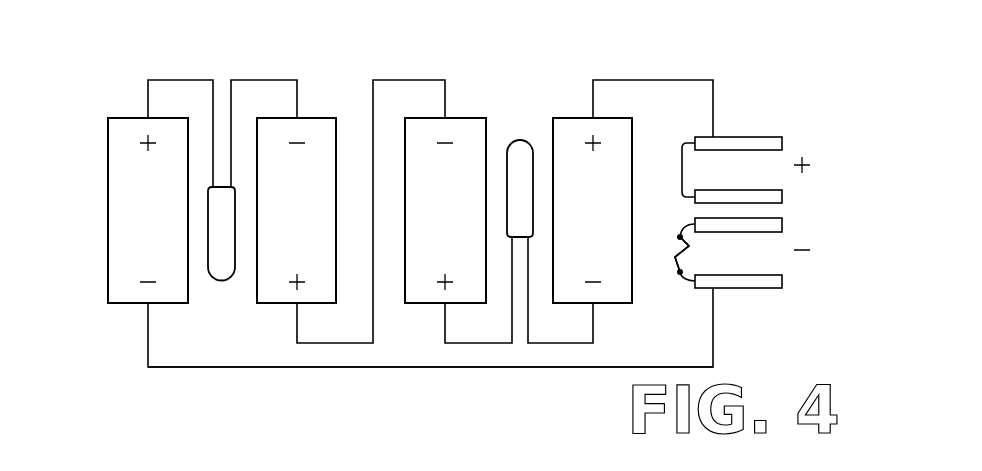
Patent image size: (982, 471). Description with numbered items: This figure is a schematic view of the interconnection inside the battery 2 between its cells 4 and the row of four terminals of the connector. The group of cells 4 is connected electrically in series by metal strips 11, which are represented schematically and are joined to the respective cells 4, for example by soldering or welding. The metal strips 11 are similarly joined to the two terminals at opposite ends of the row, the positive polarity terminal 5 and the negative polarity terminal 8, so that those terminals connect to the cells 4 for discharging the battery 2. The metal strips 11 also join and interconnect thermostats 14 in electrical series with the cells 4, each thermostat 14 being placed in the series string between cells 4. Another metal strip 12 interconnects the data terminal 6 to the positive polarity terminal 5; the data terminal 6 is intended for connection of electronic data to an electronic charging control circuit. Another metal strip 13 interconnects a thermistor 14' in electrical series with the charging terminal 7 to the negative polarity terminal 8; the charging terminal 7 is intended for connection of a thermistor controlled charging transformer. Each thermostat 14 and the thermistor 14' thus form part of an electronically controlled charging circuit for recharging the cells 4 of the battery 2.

The battery 2 is at (148, 337).
The cells 4 is at (108, 127).
The positive polarity terminal 5 is at (760, 143).
The data terminal 6 is at (770, 192).
The charging terminal 7 is at (782, 238).
The negative polarity terminal 8 is at (758, 275).
The metal strips 11 is at (247, 80).
The metal strip 12 is at (680, 170).
The metal strip 13 is at (677, 279).
The thermostat 14 is at (370, 209).
The thermistor 14' is at (664, 231).